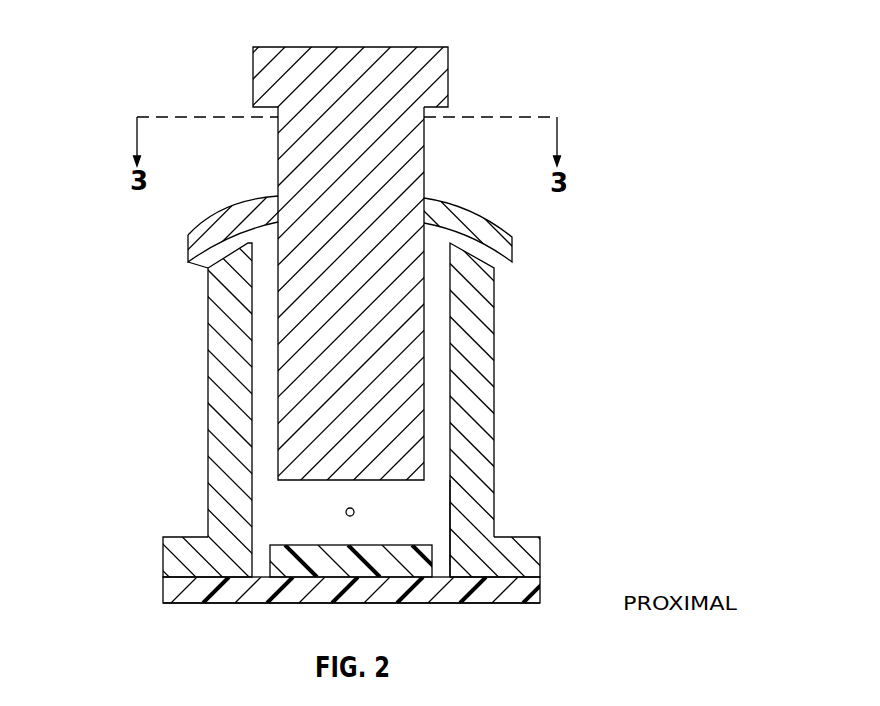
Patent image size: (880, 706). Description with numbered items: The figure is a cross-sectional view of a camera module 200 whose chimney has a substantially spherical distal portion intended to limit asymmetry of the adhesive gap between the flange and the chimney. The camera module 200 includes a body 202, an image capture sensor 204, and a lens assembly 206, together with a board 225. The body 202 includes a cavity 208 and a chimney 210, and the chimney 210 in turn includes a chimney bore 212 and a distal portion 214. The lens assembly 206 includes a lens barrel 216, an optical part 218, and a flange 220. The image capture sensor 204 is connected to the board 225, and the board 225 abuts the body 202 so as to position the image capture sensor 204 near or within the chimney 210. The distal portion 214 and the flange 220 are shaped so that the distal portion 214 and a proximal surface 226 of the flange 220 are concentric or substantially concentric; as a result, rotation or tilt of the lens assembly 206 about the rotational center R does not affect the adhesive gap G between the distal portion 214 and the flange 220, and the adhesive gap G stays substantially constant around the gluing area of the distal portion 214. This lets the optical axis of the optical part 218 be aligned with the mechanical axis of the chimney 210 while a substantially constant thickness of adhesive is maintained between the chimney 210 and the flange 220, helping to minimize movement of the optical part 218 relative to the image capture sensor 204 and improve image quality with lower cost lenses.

The camera module 200 is at (160, 55).
The body 202 is at (141, 553).
The image capture sensor 204 is at (410, 562).
The lens assembly 206 is at (440, 353).
The cavity 208 is at (380, 633).
The chimney 210 is at (440, 353).
The chimney bore 212 is at (430, 508).
The distal portion 214 is at (487, 310).
The lens barrel 216 is at (277, 360).
The optical part 218 is at (440, 33).
The flange 220 is at (476, 201).
The board 225 is at (510, 594).
The proximal surface 226 is at (220, 251).
The adhesive gap G is at (194, 269).
The rotational center R is at (346, 514).